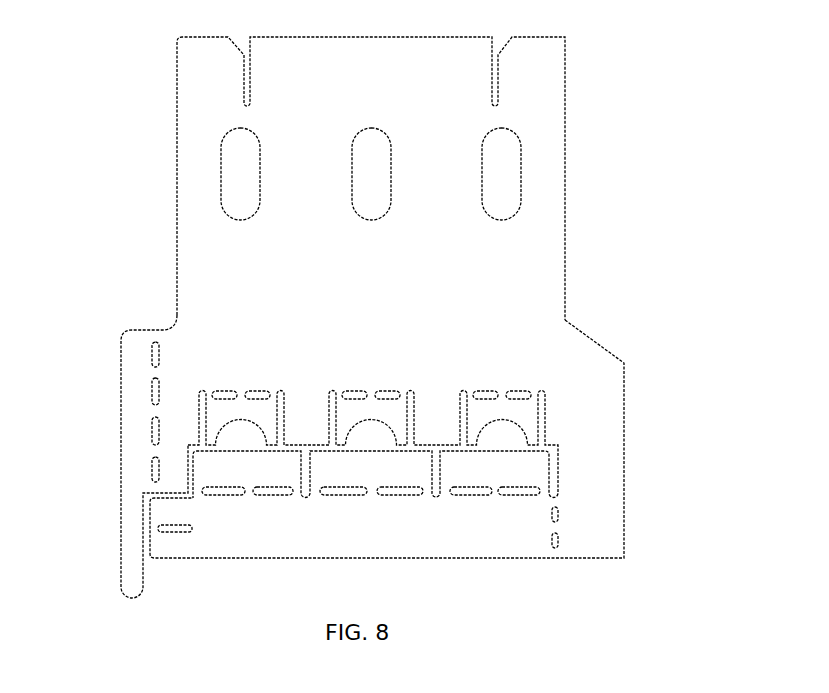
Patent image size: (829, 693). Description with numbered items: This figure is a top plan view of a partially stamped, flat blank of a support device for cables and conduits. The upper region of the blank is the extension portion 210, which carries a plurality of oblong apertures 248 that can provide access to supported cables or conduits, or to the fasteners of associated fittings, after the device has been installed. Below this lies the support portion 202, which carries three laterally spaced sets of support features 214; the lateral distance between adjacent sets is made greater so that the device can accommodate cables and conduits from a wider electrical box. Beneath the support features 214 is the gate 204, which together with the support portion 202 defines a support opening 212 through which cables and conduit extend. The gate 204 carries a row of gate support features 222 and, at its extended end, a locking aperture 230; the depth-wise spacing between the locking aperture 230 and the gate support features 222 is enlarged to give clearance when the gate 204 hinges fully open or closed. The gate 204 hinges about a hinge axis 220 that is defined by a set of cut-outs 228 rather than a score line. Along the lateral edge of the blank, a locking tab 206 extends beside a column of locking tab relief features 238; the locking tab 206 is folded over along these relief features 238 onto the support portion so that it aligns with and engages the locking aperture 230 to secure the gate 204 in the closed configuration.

The support portion 202 is at (369, 325).
The gate 204 is at (510, 558).
The locking tab 206 is at (130, 522).
The extension portion 210 is at (566, 218).
The support opening 212 is at (434, 496).
The support features 214 is at (233, 417).
The hinge axis 220 is at (586, 559).
The gate support features 222 is at (245, 472).
The cut-outs 228 is at (558, 512).
The locking aperture 230 is at (178, 534).
The locking tab relief features 238 is at (153, 428).
The oblong apertures 248 is at (240, 220).